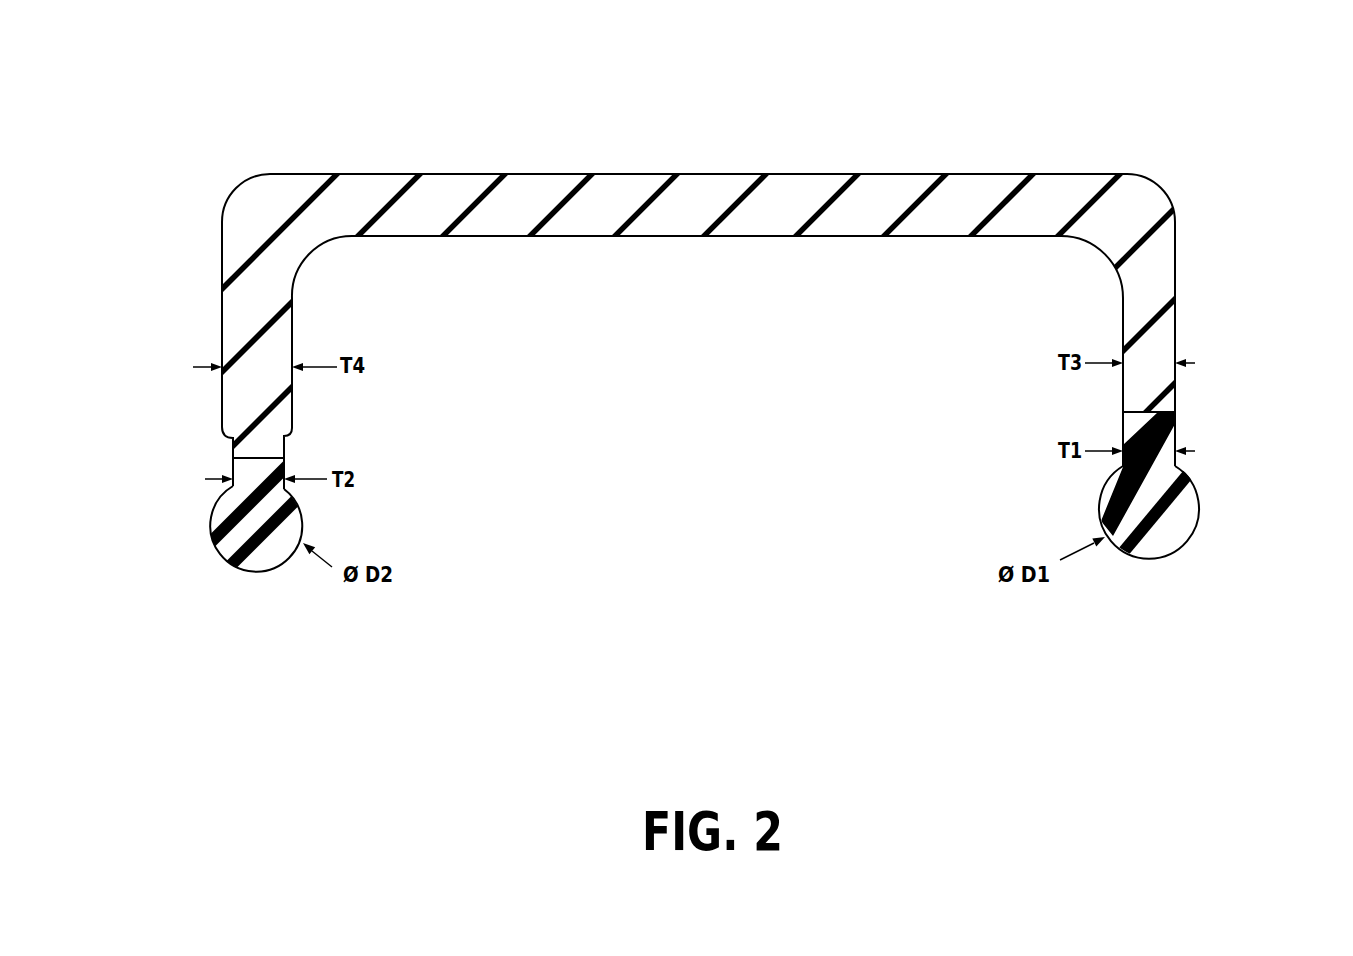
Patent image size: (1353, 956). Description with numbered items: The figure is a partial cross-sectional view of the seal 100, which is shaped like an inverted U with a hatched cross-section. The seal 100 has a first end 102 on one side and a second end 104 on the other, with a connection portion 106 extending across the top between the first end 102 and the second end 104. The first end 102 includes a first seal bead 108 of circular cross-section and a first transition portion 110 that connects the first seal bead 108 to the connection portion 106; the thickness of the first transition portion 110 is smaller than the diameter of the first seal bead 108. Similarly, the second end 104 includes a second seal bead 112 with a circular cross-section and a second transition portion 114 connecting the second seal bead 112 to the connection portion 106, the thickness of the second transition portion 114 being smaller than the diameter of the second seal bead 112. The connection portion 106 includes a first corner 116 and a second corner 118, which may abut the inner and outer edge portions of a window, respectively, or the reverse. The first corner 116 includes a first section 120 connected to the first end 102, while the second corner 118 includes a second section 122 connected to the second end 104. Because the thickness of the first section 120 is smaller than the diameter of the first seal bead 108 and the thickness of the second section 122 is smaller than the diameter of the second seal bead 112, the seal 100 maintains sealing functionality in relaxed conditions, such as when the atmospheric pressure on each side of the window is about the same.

The seal 100 is at (676, 334).
The first end 102 is at (1150, 390).
The second end 104 is at (255, 394).
The connection portion 106 is at (636, 134).
The first seal bead 108 is at (1147, 560).
The first transition portion 110 is at (1123, 440).
The second seal bead 112 is at (258, 571).
The second transition portion 114 is at (284, 462).
The first corner 116 is at (1076, 281).
The second corner 118 is at (336, 284).
The first section 120 is at (1175, 317).
The second section 122 is at (222, 317).